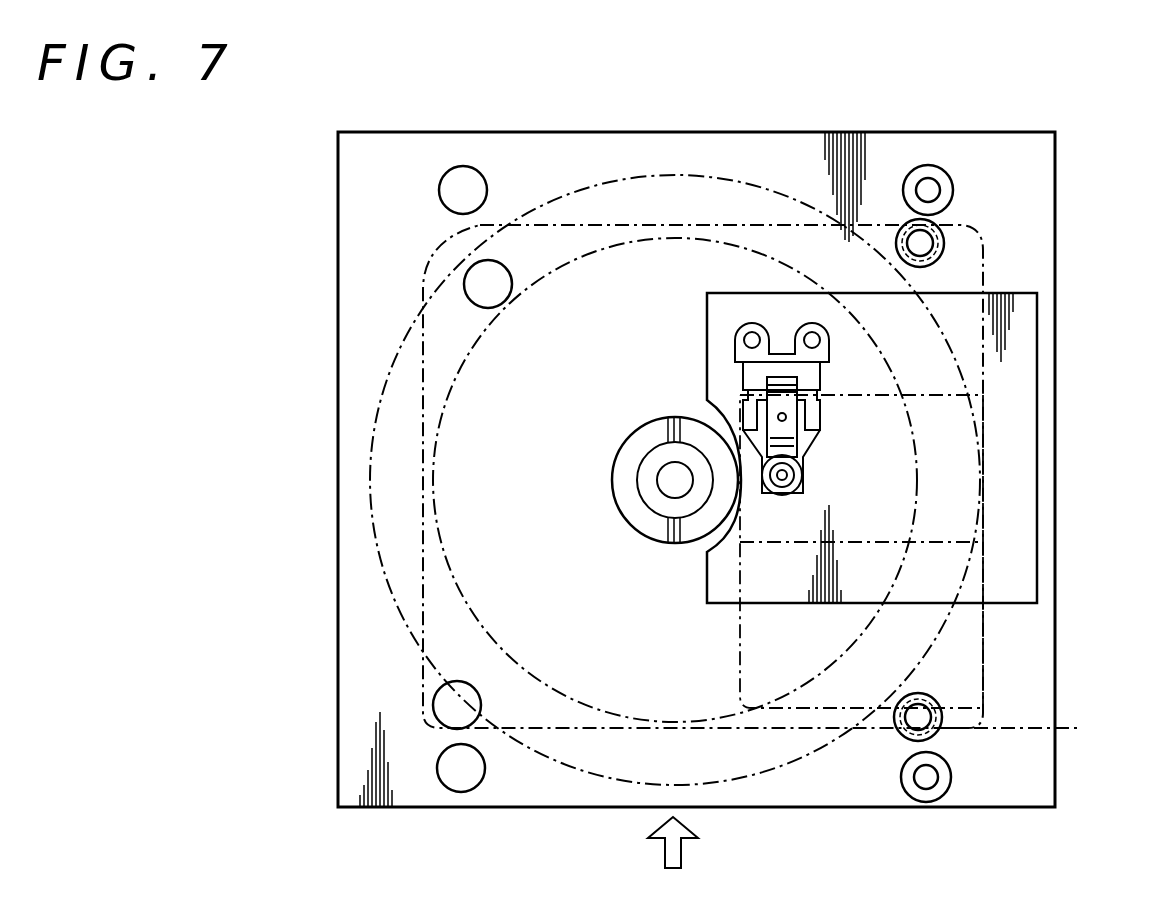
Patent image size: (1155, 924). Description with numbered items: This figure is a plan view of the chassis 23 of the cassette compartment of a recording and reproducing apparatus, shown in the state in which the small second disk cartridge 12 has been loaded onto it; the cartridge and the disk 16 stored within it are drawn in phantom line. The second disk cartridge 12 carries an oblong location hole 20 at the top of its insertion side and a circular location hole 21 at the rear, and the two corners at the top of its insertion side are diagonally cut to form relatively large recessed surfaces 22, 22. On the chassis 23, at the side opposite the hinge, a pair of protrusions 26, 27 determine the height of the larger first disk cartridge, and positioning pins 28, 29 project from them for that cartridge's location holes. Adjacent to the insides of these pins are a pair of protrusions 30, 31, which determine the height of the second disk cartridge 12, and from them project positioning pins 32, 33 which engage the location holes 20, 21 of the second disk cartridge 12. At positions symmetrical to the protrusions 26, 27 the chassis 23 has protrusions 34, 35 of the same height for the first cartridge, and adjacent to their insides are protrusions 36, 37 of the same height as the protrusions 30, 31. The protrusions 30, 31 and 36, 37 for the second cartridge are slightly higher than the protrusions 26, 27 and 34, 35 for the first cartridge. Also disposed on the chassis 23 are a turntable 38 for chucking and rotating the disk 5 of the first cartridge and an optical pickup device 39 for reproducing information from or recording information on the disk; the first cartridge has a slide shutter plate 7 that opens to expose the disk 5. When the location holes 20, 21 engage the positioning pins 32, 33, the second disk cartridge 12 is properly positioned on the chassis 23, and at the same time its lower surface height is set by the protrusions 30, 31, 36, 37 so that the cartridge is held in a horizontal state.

The disk 5 is at (685, 175).
The slide shutter plate 7 is at (917, 543).
The second disk cartridge 12 is at (655, 225).
The disk 16 is at (727, 240).
The oblong location hole 20 is at (940, 233).
The circular location hole 21 is at (935, 715).
The recessed surface 22 is at (455, 245).
The chassis 23 is at (338, 513).
The protrusion 26 is at (933, 193).
The protrusion 27 is at (930, 787).
The positioning pin 28 is at (938, 188).
The positioning pin 29 is at (923, 777).
The protrusion 30 is at (945, 243).
The protrusion 31 is at (923, 693).
The positioning pin 32 is at (948, 255).
The positioning pin 33 is at (935, 735).
The protrusion 34 is at (460, 185).
The protrusion 35 is at (462, 773).
The protrusion 36 is at (487, 292).
The protrusion 37 is at (450, 710).
The turntable 38 is at (672, 478).
The optical pickup device 39 is at (807, 447).